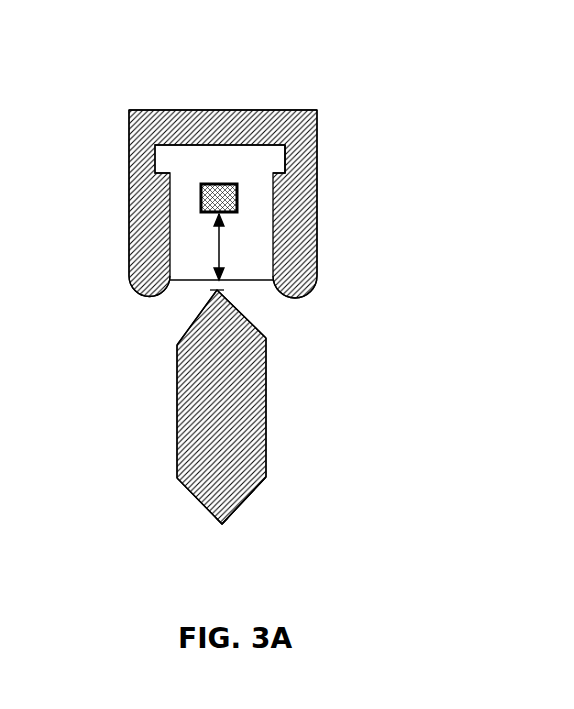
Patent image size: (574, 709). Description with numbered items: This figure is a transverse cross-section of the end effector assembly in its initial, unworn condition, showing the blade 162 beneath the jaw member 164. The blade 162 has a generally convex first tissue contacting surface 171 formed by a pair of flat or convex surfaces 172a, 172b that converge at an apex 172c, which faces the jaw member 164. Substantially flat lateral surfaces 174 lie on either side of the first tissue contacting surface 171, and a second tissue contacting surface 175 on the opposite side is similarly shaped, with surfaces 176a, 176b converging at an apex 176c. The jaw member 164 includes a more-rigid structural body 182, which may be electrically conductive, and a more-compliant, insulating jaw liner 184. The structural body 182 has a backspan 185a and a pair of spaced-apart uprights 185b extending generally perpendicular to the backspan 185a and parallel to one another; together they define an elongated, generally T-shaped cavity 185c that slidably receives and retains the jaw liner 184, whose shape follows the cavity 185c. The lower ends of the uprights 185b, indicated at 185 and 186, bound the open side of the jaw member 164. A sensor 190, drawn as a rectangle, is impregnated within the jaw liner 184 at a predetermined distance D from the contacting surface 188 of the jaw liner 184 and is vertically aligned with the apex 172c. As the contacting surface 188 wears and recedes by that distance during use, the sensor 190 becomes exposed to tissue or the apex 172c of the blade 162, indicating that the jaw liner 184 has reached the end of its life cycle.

The blade 162 is at (289, 471).
The jaw member 164 is at (336, 139).
The first tissue contacting surface 171 is at (267, 334).
The surface 172a is at (181, 326).
The surface 172b is at (252, 315).
The apex 172c is at (194, 299).
The lateral surfaces 174 is at (268, 408).
The second tissue contacting surface 175 is at (242, 516).
The surface 176a is at (195, 497).
The surface 176b is at (253, 491).
The apex 176c is at (223, 527).
The structural body 182 is at (190, 122).
The jaw liner 184 is at (190, 181).
The leg end 185 is at (307, 301).
The backspan 185a is at (238, 127).
The uprights 185b is at (317, 203).
The cavity 185c is at (291, 140).
The leg rounded end 186 is at (126, 277).
The contacting surface 188 is at (314, 263).
The sensor 190 is at (198, 216).